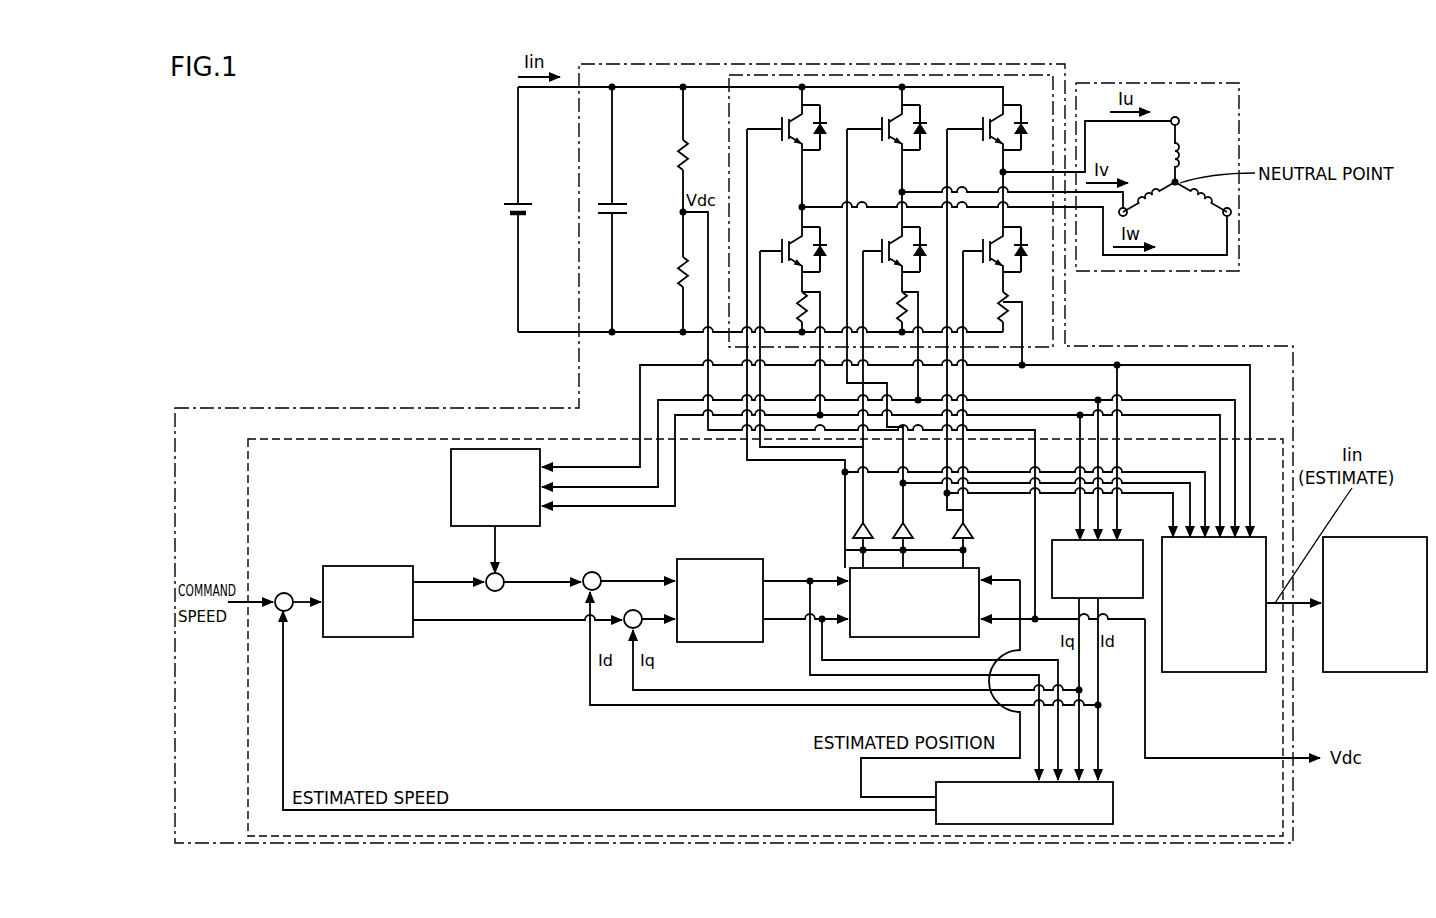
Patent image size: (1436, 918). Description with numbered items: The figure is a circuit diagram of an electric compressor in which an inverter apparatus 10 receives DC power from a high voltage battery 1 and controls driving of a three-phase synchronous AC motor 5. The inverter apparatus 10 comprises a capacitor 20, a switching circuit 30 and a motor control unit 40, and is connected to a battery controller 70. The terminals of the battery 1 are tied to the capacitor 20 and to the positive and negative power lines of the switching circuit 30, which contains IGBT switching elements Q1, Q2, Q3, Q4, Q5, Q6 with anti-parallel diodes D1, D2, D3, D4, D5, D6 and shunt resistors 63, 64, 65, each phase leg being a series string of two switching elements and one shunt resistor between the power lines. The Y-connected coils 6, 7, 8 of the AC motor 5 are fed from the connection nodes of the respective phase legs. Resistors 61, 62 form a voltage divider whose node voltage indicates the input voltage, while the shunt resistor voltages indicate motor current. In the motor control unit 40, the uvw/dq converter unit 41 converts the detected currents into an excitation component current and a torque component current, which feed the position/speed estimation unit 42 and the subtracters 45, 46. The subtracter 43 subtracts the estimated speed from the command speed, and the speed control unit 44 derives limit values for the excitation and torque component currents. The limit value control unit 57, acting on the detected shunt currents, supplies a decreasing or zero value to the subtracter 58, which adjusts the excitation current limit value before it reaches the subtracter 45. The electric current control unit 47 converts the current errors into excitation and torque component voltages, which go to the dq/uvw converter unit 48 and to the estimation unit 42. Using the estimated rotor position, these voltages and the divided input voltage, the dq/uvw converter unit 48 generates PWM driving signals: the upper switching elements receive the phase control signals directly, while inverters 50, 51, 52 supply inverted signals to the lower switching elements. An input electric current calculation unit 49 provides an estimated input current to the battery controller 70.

The high voltage battery 1 is at (521, 203).
The AC motor 5 is at (1215, 82).
The coil 6 is at (1182, 153).
The coil 7 is at (1142, 190).
The coil 8 is at (1202, 203).
The inverter apparatus 10 is at (1265, 346).
The capacitor 20 is at (617, 214).
The switching circuit 30 is at (1056, 340).
The motor control unit 40 is at (1268, 437).
The uvw/dq converter unit 41 is at (1125, 538).
The position/speed estimation unit 42 is at (1115, 800).
The subtracter 43 is at (290, 595).
The speed control unit 44 is at (362, 570).
The subtracter 45 is at (598, 573).
The subtracter 46 is at (639, 611).
The electric current control unit 47 is at (720, 559).
The dq/uvw converter unit 48 is at (922, 638).
The input electric current calculation unit 49 is at (1218, 675).
The inverter 50 is at (975, 529).
The inverter 51 is at (909, 527).
The inverter 52 is at (852, 529).
The limit value control unit 57 is at (530, 527).
The subtracter 58 is at (502, 590).
The resistor 61 is at (678, 153).
The resistor 62 is at (678, 272).
The shunt resistor 63 is at (998, 308).
The shunt resistor 64 is at (898, 308).
The shunt resistor 65 is at (798, 308).
The battery controller 70 is at (1365, 538).
The switching element Q1 is at (992, 116).
The switching element Q2 is at (992, 238).
The switching element Q3 is at (891, 116).
The switching element Q4 is at (891, 238).
The switching element Q5 is at (791, 116).
The switching element Q6 is at (791, 238).
The diode D1 is at (1024, 137).
The diode D2 is at (1024, 259).
The diode D3 is at (923, 137).
The diode D4 is at (923, 259).
The diode D5 is at (823, 137).
The diode D6 is at (823, 259).